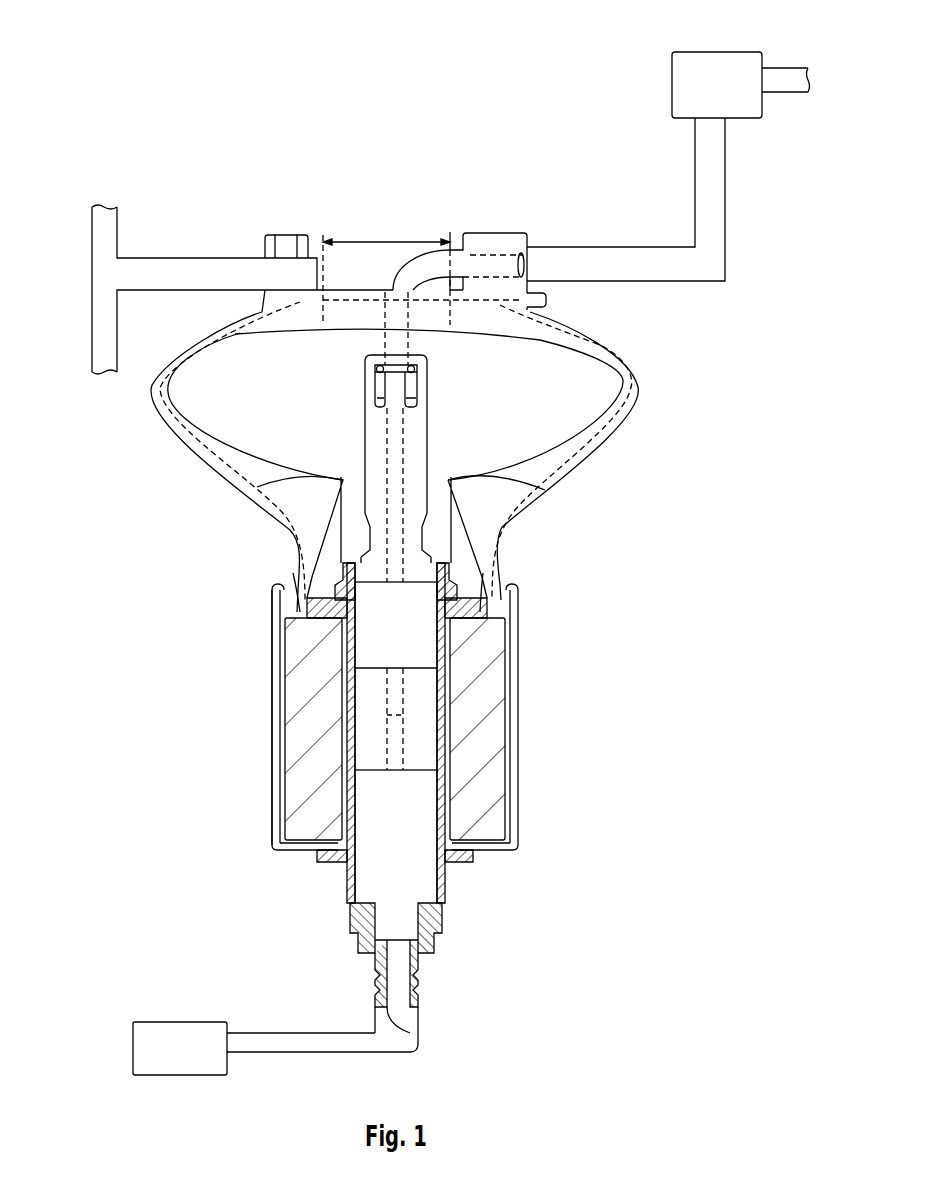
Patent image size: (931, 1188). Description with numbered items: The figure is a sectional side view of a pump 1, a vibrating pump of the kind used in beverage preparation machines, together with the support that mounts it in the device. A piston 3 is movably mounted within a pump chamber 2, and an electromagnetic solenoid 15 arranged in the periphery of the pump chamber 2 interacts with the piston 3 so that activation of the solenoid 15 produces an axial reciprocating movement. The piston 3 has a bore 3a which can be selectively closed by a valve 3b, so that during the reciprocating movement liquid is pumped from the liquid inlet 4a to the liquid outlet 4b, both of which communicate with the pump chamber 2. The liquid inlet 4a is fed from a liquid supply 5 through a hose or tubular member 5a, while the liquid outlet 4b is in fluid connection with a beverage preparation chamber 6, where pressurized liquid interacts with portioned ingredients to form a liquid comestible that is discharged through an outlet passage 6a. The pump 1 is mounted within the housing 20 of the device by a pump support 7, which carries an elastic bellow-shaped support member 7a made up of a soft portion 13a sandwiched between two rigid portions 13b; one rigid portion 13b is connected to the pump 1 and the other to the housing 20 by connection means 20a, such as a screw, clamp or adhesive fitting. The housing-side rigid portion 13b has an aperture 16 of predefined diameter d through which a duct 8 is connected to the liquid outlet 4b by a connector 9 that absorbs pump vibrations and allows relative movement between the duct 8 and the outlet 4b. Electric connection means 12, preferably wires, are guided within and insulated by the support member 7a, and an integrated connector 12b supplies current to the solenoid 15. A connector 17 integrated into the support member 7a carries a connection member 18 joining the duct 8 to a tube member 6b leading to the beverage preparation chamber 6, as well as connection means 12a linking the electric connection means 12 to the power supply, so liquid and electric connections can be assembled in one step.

The pump 1 is at (508, 627).
The pump chamber 2 is at (425, 862).
The piston 3 is at (408, 752).
The bore 3a is at (440, 706).
The valve 3b is at (390, 706).
The liquid inlet 4a is at (413, 1030).
The liquid outlet 4b is at (364, 376).
The liquid supply 5 is at (186, 1058).
The hose or tubular member 5a is at (312, 1045).
The beverage preparation chamber 6 is at (724, 95).
The outlet passage 6a is at (790, 75).
The tube member 6b is at (716, 200).
The pump support 7 is at (278, 603).
The bellow-shaped support member 7a is at (165, 430).
The duct 8 is at (398, 322).
The connector 9 is at (528, 252).
The electric connection means 12 is at (255, 487).
The connection means 12a is at (548, 300).
The integrated connector 12b is at (288, 578).
The soft portion 13a is at (625, 420).
The rigid portion 13b is at (283, 313).
The electromagnetic solenoid 15 is at (490, 683).
The aperture 16 is at (440, 255).
The connector 17 is at (490, 240).
The connection member 18 is at (503, 248).
The housing 20 is at (110, 283).
The connection means 20a is at (280, 232).
The predefined diameter d is at (386, 269).